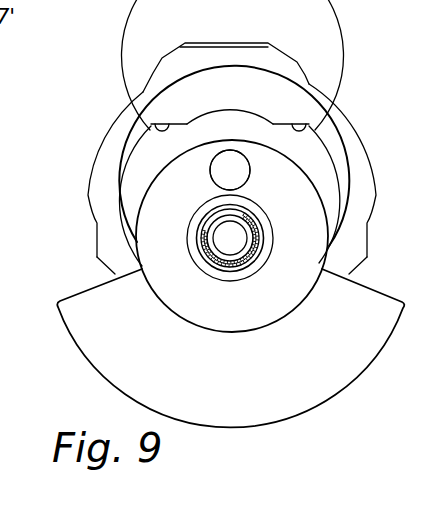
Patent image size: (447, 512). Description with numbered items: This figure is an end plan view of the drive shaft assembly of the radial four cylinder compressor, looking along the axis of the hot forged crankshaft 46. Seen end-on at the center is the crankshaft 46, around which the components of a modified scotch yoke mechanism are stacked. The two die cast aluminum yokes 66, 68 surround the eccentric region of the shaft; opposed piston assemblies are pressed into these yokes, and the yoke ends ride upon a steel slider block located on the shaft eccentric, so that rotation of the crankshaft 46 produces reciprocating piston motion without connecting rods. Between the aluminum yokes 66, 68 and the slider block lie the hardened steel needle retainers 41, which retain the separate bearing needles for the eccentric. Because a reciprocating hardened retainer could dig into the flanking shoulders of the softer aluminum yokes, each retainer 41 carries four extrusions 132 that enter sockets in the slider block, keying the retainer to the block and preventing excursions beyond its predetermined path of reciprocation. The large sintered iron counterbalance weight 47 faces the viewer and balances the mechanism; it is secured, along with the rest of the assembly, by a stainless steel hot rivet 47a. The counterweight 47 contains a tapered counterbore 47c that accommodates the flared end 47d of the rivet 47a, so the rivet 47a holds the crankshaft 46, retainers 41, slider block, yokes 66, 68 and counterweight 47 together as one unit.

The die cast aluminum yoke 66 is at (277, 56).
The die cast aluminum yoke 68 is at (342, 259).
The hardened steel needle retainer 41 is at (130, 173).
The extrusion 132 is at (303, 126).
The sintered iron counterbalance weight 47 is at (327, 368).
The stainless steel hot rivet 47a is at (218, 170).
The tapered counterbore 47c is at (244, 155).
The flared end of rivet 47d is at (238, 173).
The hot forged crankshaft 46 is at (227, 257).